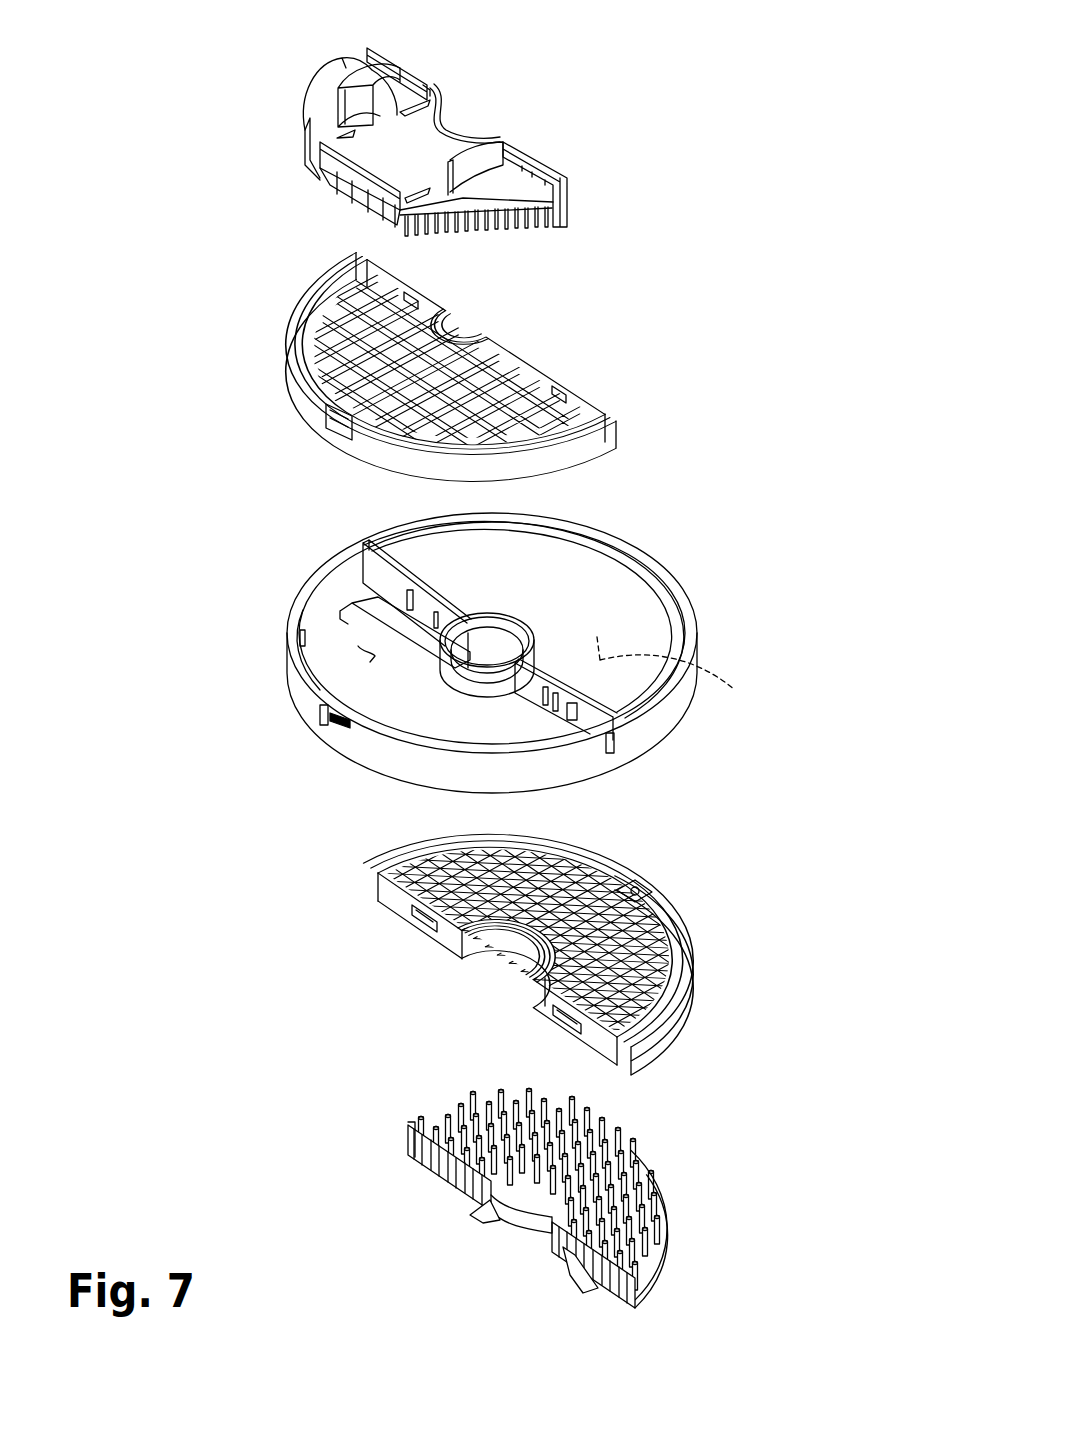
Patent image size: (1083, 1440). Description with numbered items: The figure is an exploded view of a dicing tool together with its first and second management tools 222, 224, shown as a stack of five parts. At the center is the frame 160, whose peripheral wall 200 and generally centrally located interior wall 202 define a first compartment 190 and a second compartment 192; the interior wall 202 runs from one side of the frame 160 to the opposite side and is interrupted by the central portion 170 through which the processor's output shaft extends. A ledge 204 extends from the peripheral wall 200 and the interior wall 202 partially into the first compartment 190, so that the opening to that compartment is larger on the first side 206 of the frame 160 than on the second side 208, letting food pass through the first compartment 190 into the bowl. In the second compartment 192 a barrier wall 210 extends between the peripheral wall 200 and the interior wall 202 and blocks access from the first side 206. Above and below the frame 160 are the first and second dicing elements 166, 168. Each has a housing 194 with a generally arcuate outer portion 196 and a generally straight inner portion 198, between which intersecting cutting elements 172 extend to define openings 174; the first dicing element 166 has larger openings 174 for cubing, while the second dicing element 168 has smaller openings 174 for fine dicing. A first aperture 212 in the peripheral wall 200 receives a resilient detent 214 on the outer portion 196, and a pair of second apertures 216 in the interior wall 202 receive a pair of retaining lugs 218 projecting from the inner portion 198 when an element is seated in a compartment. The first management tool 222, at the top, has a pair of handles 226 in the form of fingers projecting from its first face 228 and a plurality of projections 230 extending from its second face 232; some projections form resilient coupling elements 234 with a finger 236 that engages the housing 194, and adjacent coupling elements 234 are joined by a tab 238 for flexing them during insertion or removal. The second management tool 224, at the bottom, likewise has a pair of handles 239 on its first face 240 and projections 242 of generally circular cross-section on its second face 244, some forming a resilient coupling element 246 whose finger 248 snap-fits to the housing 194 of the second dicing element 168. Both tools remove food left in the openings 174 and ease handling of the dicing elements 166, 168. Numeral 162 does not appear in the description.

The frame 160 is at (481, 650).
The locking tab 162 is at (320, 712).
The first dicing element 166 is at (290, 305).
The second dicing element 168 is at (700, 978).
The central portion 170 is at (498, 630).
The cutting elements 172 is at (490, 373).
The openings 174 is at (520, 393).
The first compartment 190 is at (375, 648).
The second compartment 192 is at (735, 690).
The housing 194 is at (528, 682).
The outer portion 196 is at (407, 452).
The inner portion 198 is at (447, 320).
The peripheral wall 200 is at (397, 757).
The interior wall 202 is at (377, 573).
The ledge 204 is at (322, 647).
The first side 206 is at (672, 592).
The second side 208 is at (638, 752).
The barrier wall 210 is at (585, 577).
The first aperture 212 is at (334, 722).
The resilient detent 214 is at (333, 428).
The second apertures 216 is at (412, 590).
The retaining lugs 218 is at (413, 298).
The first management tool 222 is at (437, 143).
The second management tool 224 is at (568, 1219).
The handles 226 is at (396, 96).
The first face 228 is at (336, 72).
The projections 230 is at (510, 238).
The second face 232 is at (562, 230).
The resilient coupling element 234 is at (328, 170).
The finger 236 is at (340, 198).
The tab 238 is at (330, 133).
The handles 239 is at (484, 1219).
The first face 240 is at (612, 1297).
The projections 242 is at (668, 1218).
The second face 244 is at (672, 1255).
The resilient coupling element 246 is at (447, 1178).
The finger 248 is at (490, 1205).